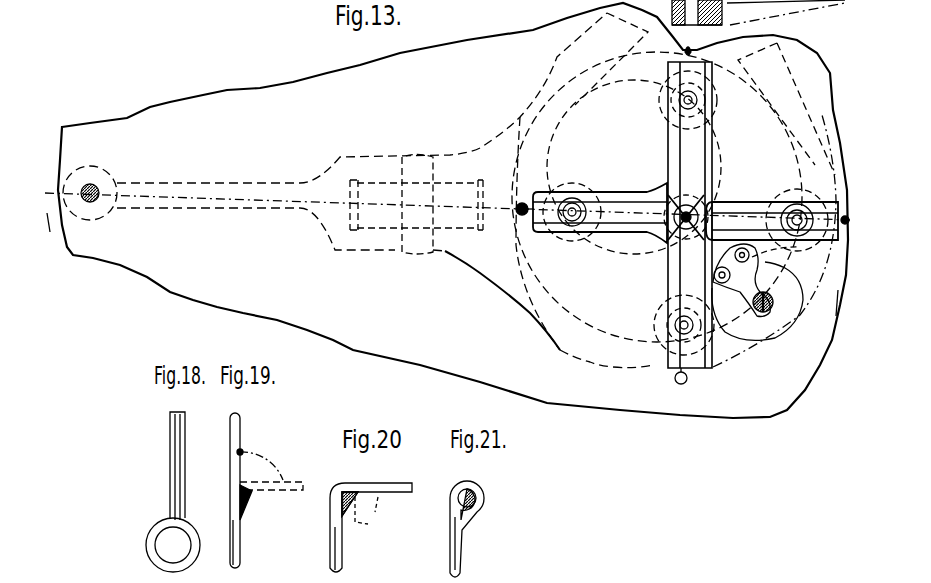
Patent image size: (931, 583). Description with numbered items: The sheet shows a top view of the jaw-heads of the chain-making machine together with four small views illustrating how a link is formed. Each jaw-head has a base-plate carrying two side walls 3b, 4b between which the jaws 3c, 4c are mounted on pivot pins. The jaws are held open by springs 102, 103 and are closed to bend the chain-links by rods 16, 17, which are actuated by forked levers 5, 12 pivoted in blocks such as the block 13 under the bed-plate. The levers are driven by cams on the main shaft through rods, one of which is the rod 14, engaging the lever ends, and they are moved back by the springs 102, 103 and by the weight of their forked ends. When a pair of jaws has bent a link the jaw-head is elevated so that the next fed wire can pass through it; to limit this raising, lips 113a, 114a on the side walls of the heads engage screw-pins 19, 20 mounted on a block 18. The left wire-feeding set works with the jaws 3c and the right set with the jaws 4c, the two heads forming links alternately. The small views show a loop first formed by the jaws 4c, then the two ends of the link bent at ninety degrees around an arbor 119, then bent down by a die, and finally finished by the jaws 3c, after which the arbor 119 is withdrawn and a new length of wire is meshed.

In FIG. 13, the forked lever 12 is at (268, 188).
In FIG. 13, the rod 14 is at (97, 186).
In FIG. 13, the block 13 is at (380, 215).
In FIG. 13, the spring 103 is at (518, 216).
In FIG. 13, the side wall 4b is at (738, 204).
In FIG. 13, the jaw 4c is at (752, 202).
In FIG. 13, the side wall 3b is at (667, 297).
In FIG. 13, the jaw 3c is at (683, 267).
In FIG. 13, the rod 17 is at (584, 206).
In FIG. 13, the rod 16 is at (680, 103).
In FIG. 13, the spring 102 is at (688, 381).
In FIG. 13, the forked lever 5 is at (602, 32).
In FIG. 13, the block 18 is at (768, 325).
In FIG. 13, the lip 114a is at (754, 280).
In FIG. 13, the screw-pin 20 is at (752, 256).
In FIG. 13, the screw-pin 19 is at (720, 283).
In FIG. 13, the lip 113a is at (750, 306).
In FIG. 19, the arbor 119 is at (246, 500).
In FIG. 20, the arbor 119 is at (356, 505).
In FIG. 21, the arbor 119 is at (476, 507).